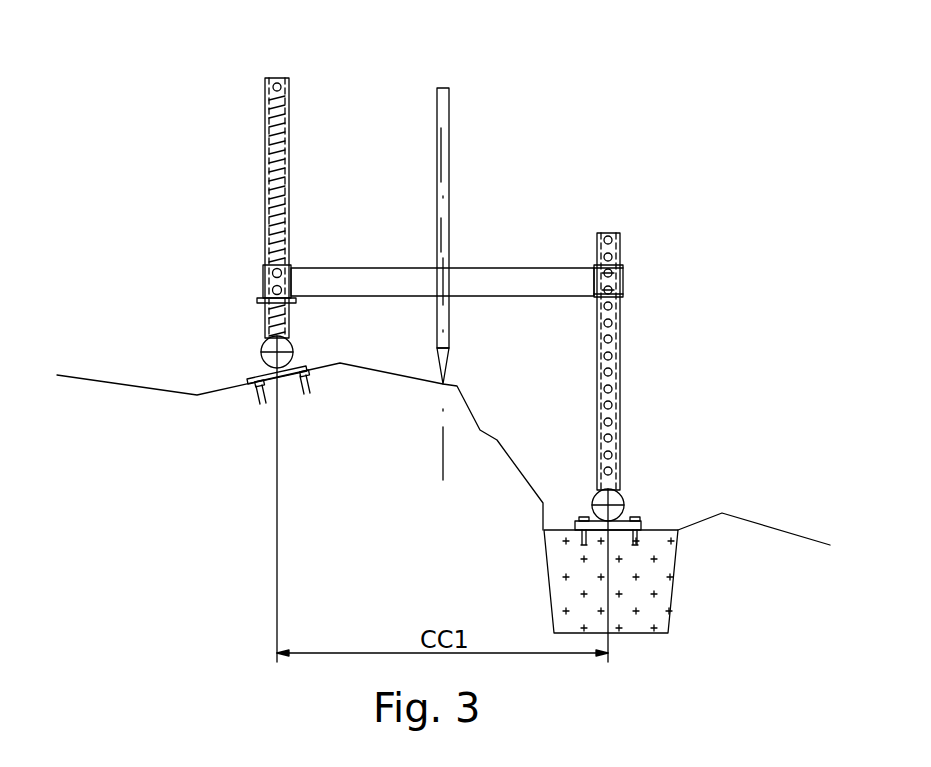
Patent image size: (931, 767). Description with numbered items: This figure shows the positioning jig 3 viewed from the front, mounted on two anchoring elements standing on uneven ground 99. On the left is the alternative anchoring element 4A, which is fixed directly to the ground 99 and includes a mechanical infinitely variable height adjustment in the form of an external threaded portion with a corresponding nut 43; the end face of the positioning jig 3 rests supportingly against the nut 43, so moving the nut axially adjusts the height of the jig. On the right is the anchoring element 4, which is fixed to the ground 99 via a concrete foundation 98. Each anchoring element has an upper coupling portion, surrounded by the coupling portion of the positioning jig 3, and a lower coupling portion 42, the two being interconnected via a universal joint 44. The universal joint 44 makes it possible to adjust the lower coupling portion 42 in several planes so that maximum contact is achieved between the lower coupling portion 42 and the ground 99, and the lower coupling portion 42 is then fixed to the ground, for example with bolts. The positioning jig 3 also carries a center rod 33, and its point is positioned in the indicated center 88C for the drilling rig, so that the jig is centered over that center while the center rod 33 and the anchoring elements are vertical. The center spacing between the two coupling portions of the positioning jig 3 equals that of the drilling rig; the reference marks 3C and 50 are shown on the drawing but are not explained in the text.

The positioning jig 3 is at (527, 268).
The center of cross bar 3C is at (440, 268).
The anchoring element 4 is at (620, 342).
The alternative embodiment of anchoring element 4A is at (265, 170).
The center rod 33 is at (450, 88).
The lower coupling portion 42 is at (645, 527).
The nut 43 is at (260, 300).
The universal joint 44 is at (265, 345).
The base plate 50 is at (636, 521).
The indicated center 88C is at (443, 384).
The concrete foundation 98 is at (672, 597).
The ground 99 is at (127, 385).